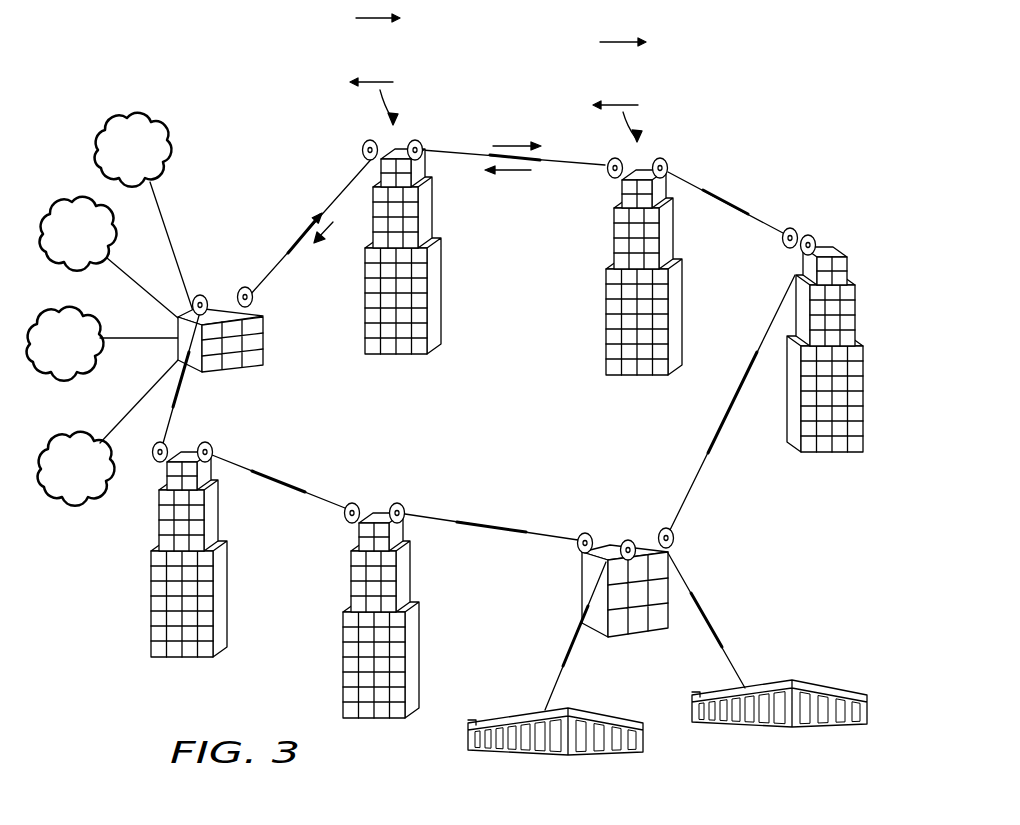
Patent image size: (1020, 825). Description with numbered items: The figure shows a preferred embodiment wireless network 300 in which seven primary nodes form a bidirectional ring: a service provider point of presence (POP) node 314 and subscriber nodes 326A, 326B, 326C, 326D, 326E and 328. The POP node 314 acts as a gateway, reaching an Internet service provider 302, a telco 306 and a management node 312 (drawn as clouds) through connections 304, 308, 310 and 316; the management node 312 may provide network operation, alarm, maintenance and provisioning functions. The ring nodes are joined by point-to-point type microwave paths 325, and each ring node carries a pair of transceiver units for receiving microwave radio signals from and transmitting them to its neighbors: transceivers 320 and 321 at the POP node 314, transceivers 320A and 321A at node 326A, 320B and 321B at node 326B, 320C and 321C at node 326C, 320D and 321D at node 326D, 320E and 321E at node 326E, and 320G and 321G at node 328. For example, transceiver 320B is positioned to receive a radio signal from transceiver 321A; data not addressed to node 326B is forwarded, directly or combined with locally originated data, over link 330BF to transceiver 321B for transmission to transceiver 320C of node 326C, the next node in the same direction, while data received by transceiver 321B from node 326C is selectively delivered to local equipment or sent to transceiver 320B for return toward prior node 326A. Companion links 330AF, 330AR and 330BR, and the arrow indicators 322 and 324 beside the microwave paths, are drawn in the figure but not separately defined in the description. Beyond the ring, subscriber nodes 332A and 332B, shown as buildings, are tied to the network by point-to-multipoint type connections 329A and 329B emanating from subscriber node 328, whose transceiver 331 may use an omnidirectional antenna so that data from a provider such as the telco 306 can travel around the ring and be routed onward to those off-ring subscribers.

The network 300 is at (813, 65).
The Internet service provider 302 is at (151, 161).
The connection 304 is at (162, 206).
The telco 306 is at (96, 245).
The connection 308 is at (110, 270).
The connection 310 is at (140, 350).
The management node 312 is at (83, 355).
The point of presence (POP) node 314 is at (94, 480).
The connection 316 is at (114, 424).
The transceiver unit 320 is at (200, 294).
The transceiver unit 321 is at (245, 286).
The forward link 322 is at (297, 214).
The reverse link 324 is at (324, 243).
The point-to-point type microwave paths 325 is at (556, 168).
The subscriber node 326A is at (392, 357).
The subscriber node 326B is at (641, 378).
The subscriber node 326C is at (835, 455).
The subscriber node 326D is at (370, 720).
The subscriber node 326E is at (178, 659).
The transceiver unit 320A is at (366, 141).
The transceiver unit 321A is at (420, 141).
The transceiver unit 320B is at (610, 158).
The transceiver unit 321B is at (664, 157).
The transceiver unit 320C is at (790, 227).
The transceiver unit 321C is at (812, 236).
The transceiver unit 320D is at (344, 521).
The transceiver unit 321D is at (399, 502).
The transceiver unit 320E is at (158, 464).
The transceiver unit 321E is at (208, 441).
The transceiver unit 320G is at (582, 532).
The transceiver unit 321G is at (675, 540).
The subscriber node 328 is at (640, 640).
The point-to-multipoint type connection 329A is at (566, 660).
The point-to-multipoint type connection 329B is at (728, 663).
The forward traffic A 330AF is at (378, 69).
The reverse traffic A 330AR is at (378, 69).
The link 330BF is at (620, 90).
The reverse traffic B 330BR is at (620, 92).
The transceiver 331 is at (629, 539).
The subscriber node 332A is at (541, 755).
The subscriber node 332B is at (814, 727).